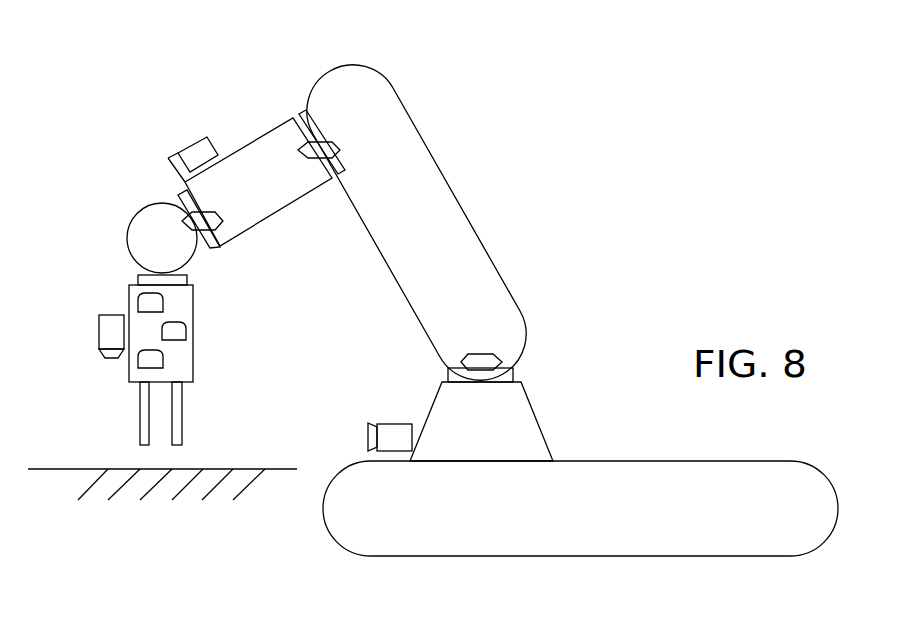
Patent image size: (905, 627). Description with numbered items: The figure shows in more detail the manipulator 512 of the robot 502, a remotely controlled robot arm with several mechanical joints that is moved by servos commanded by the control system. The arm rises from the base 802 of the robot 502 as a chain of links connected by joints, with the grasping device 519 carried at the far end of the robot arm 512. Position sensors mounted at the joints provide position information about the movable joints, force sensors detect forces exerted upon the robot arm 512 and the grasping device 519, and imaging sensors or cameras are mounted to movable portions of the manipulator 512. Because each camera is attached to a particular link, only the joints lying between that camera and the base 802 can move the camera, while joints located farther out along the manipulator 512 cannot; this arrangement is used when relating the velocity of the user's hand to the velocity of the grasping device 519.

The robot 502 is at (660, 285).
The manipulator 512 is at (152, 124).
The grasping device 519 is at (182, 410).
The base 802 is at (638, 458).